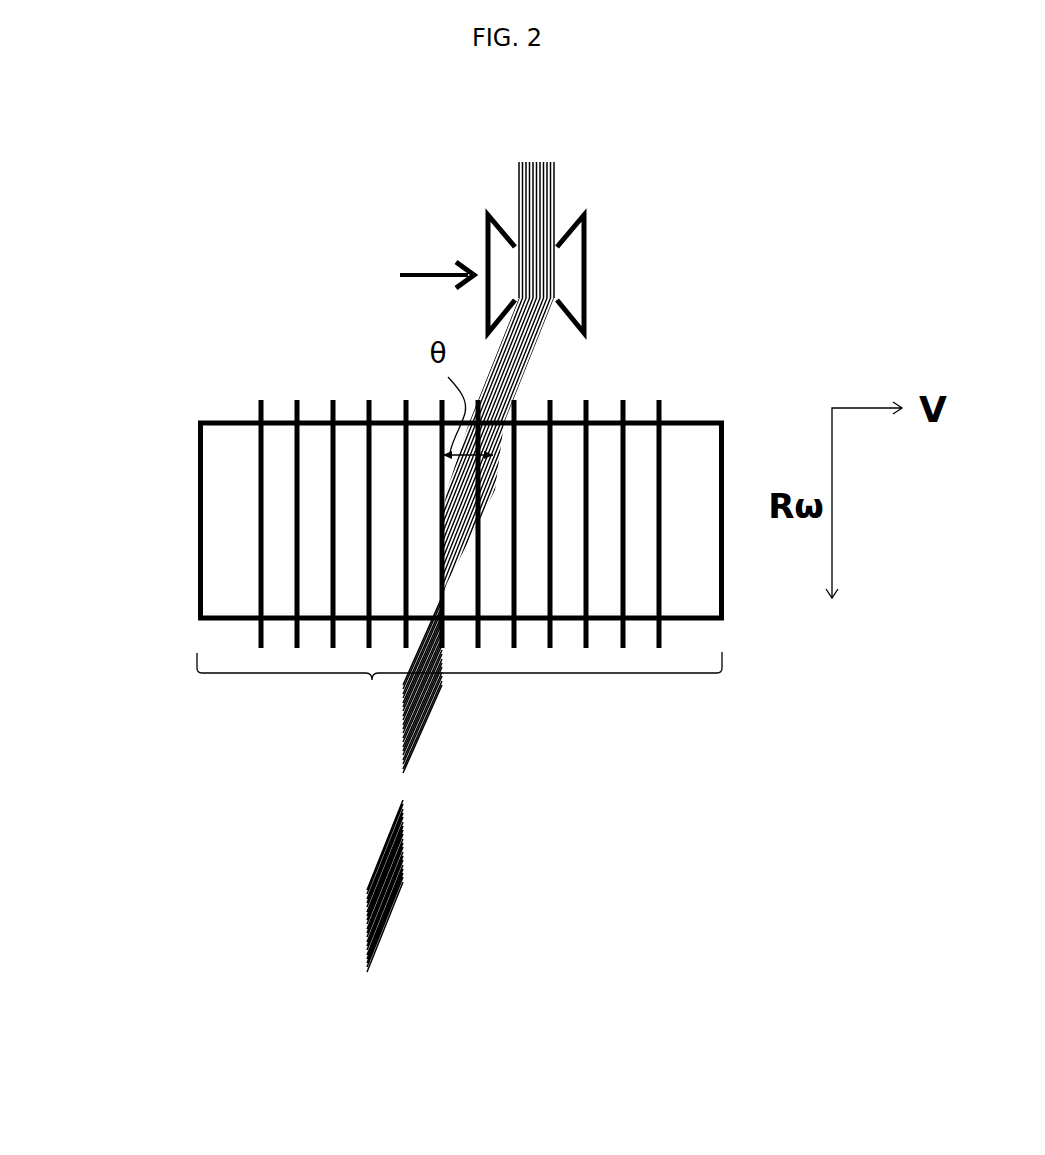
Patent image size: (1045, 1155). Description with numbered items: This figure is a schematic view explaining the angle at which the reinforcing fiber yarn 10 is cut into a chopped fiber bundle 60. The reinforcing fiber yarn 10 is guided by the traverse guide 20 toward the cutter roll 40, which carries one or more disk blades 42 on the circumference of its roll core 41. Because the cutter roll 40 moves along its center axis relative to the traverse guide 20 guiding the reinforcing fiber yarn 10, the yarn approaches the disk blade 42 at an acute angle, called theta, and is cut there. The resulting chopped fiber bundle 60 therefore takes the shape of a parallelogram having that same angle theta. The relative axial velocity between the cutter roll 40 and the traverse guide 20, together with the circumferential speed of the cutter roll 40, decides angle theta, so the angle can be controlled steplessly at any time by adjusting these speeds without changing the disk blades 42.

The reinforcing fiber yarn 10 is at (523, 177).
The traverse guide 20 is at (588, 273).
The cutter roll 40 is at (375, 607).
The roll core 41 is at (197, 523).
The disk blade 42 is at (590, 642).
The chopped fiber bundle 60 is at (405, 760).